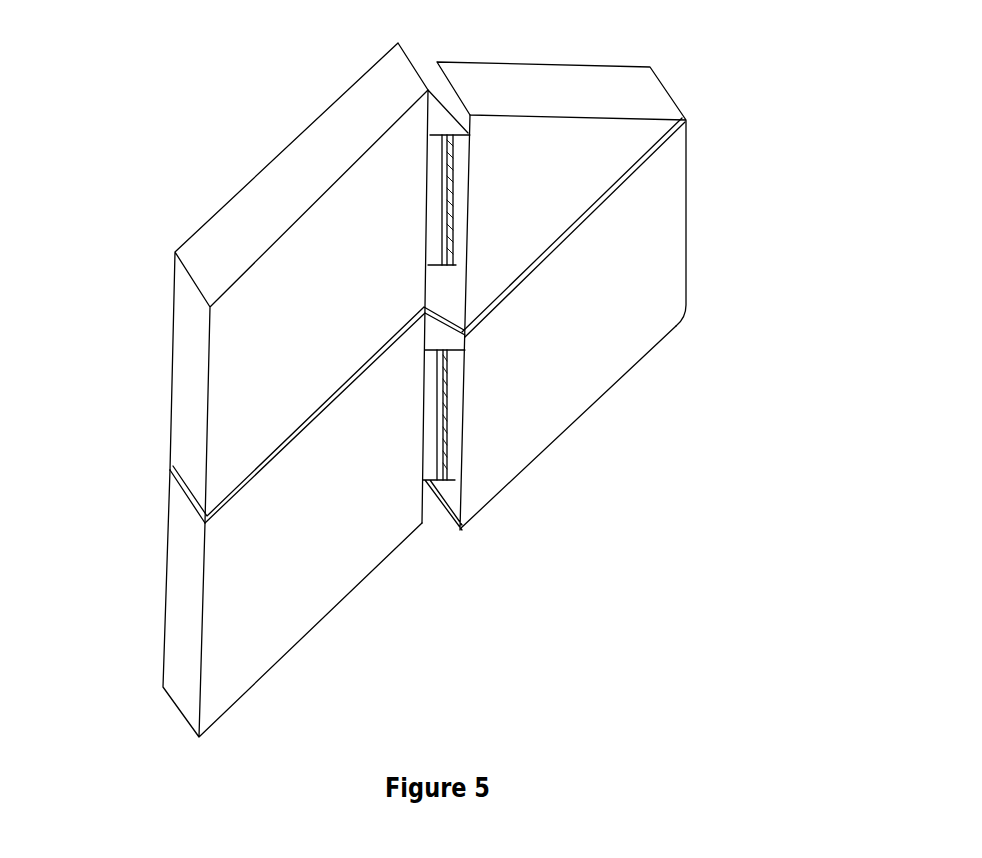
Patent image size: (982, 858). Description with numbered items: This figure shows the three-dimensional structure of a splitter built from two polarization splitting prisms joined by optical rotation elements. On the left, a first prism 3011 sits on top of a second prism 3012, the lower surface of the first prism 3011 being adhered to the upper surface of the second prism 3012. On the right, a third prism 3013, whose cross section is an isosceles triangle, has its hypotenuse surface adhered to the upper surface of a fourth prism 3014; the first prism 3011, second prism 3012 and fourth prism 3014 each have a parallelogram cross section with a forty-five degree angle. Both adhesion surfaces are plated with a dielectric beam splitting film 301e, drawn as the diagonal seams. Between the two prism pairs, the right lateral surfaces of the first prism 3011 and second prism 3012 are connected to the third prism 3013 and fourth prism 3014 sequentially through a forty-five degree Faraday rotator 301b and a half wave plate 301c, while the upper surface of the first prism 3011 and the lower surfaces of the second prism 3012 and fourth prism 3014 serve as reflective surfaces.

The first prism 3011 is at (197, 340).
The second prism 3012 is at (187, 590).
The third prism 3013 is at (583, 98).
The fourth prism 3014 is at (517, 427).
The dielectric beam splitting film 301e is at (168, 485).
The Faraday rotator 301b is at (430, 368).
The wave plate 301c is at (453, 397).